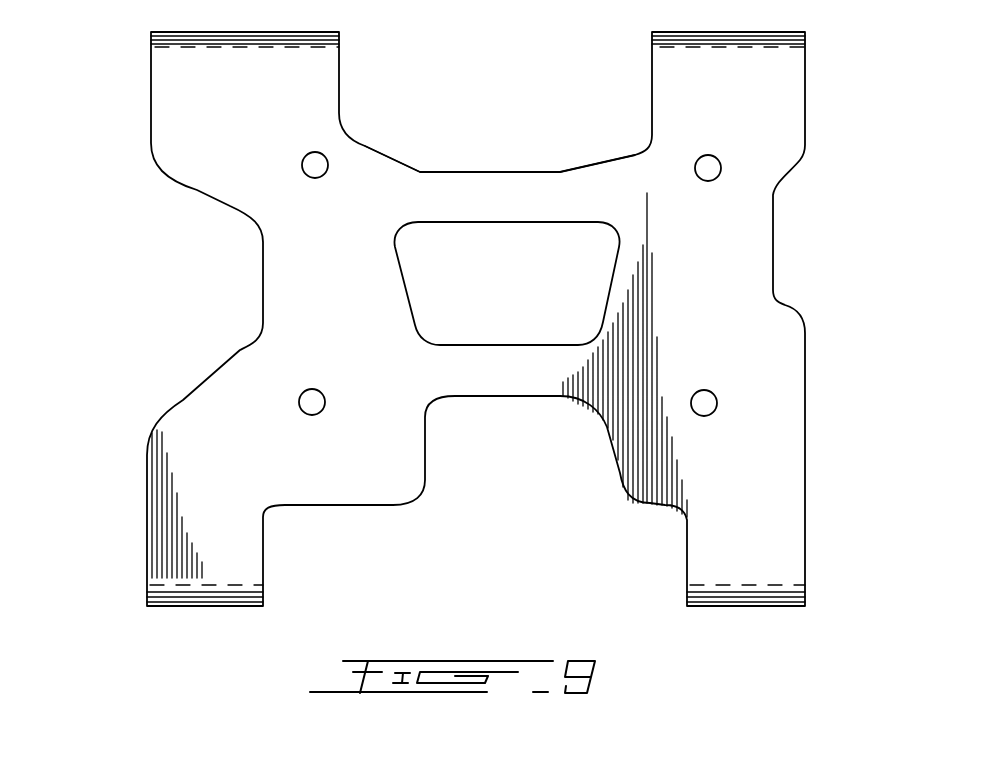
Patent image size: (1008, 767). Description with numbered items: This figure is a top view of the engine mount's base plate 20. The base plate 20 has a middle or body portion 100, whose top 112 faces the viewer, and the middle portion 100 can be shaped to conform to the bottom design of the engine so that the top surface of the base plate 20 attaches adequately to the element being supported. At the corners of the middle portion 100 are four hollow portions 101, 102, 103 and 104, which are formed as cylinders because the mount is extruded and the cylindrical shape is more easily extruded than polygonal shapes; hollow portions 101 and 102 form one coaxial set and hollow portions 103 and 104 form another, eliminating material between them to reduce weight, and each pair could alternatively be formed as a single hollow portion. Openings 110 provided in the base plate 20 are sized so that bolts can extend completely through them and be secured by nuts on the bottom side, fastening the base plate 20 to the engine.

The base plate 20 is at (113, 244).
The middle portion 100 is at (505, 385).
The hollow portion 101 is at (203, 63).
The hollow portion 102 is at (742, 63).
The hollow portion 103 is at (208, 588).
The hollow portion 104 is at (747, 590).
The openings 110 is at (315, 165).
The top 112 is at (497, 202).